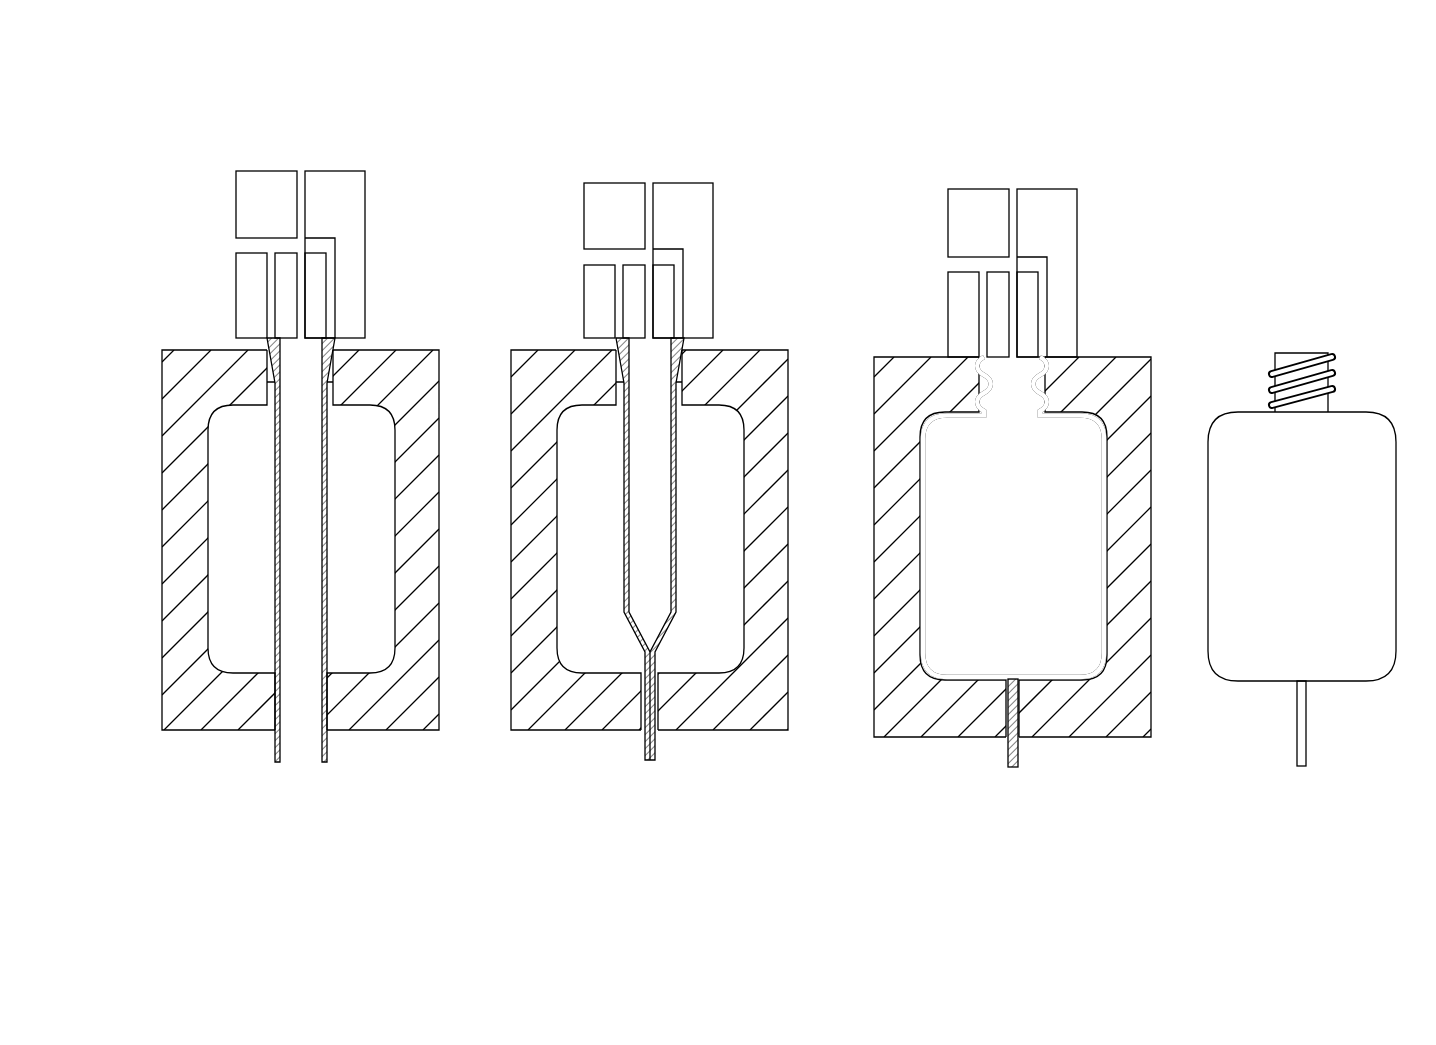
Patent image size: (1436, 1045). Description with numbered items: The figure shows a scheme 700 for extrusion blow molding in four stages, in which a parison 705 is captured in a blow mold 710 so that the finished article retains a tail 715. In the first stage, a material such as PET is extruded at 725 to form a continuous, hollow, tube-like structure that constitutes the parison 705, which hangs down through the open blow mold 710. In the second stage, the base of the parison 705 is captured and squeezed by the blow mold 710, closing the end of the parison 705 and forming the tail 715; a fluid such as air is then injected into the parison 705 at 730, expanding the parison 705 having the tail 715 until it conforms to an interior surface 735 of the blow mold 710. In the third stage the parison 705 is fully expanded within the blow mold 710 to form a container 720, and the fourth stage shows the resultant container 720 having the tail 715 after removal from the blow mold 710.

The scheme 700 is at (222, 80).
The parison 705 is at (276, 573).
The blow mold 710 is at (168, 678).
The tail 715 is at (646, 740).
The container 720 is at (1094, 418).
The extrusion location 725 is at (231, 240).
The fluid injection location 730 is at (643, 164).
The interior surface 735 is at (394, 517).